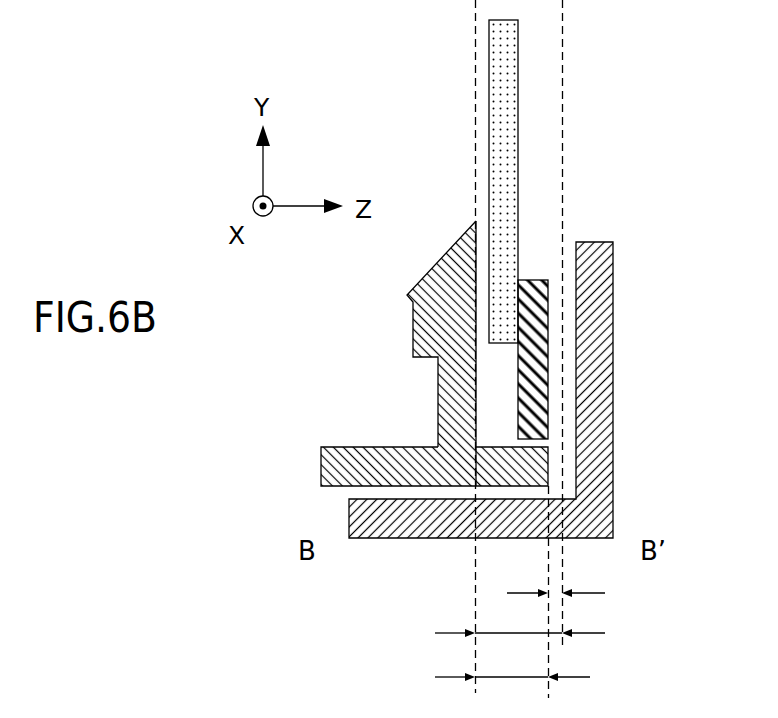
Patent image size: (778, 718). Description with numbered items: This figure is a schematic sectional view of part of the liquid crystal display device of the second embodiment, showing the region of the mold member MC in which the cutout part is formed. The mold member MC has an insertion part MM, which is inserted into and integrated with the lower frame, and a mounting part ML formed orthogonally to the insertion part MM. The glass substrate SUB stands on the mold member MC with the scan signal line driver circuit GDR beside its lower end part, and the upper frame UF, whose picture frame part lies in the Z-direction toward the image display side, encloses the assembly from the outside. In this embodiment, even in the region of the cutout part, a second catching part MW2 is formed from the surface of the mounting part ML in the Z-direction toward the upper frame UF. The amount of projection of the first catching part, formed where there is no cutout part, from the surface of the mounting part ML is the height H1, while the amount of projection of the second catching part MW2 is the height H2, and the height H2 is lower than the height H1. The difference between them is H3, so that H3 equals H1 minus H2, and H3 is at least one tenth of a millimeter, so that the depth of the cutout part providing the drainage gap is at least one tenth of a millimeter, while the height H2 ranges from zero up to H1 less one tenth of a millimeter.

The glass substrate SUB is at (442, 181).
The scan signal line driver circuit GDR is at (620, 359).
The upper frame UF is at (498, 344).
The mounting part ML is at (404, 353).
The insertion part MM is at (326, 447).
The second catching part MW2 is at (517, 471).
The mold member MC is at (362, 398).
The height of the first catching part H1 is at (543, 635).
The height of the second catching part H2 is at (536, 679).
The difference between the heights of the first and second catching parts H3 is at (579, 595).